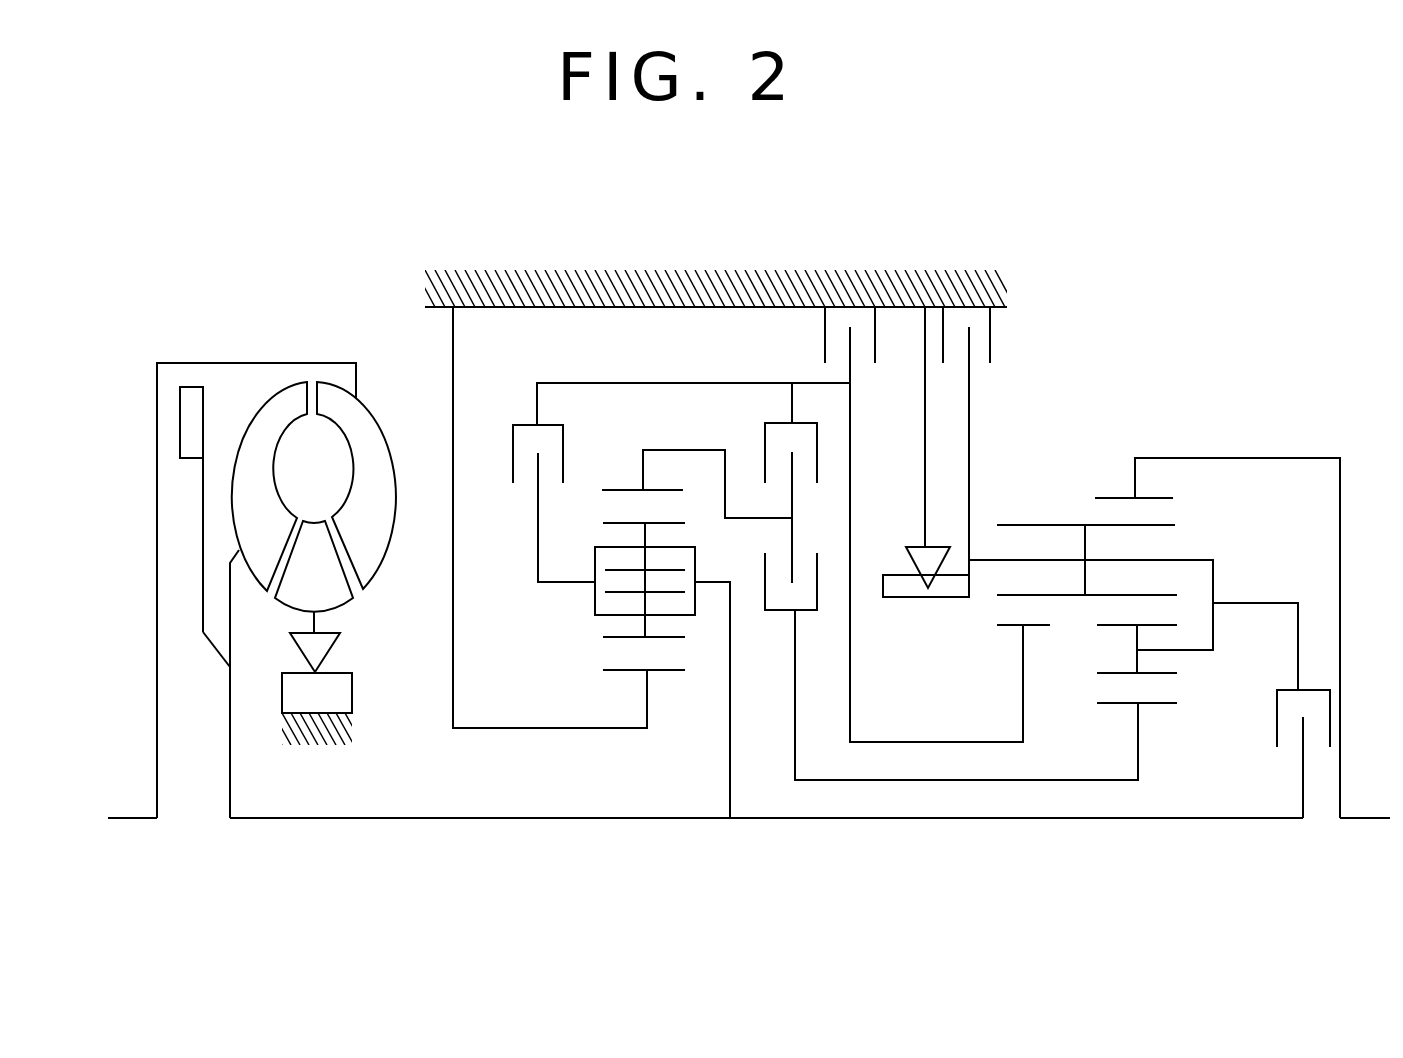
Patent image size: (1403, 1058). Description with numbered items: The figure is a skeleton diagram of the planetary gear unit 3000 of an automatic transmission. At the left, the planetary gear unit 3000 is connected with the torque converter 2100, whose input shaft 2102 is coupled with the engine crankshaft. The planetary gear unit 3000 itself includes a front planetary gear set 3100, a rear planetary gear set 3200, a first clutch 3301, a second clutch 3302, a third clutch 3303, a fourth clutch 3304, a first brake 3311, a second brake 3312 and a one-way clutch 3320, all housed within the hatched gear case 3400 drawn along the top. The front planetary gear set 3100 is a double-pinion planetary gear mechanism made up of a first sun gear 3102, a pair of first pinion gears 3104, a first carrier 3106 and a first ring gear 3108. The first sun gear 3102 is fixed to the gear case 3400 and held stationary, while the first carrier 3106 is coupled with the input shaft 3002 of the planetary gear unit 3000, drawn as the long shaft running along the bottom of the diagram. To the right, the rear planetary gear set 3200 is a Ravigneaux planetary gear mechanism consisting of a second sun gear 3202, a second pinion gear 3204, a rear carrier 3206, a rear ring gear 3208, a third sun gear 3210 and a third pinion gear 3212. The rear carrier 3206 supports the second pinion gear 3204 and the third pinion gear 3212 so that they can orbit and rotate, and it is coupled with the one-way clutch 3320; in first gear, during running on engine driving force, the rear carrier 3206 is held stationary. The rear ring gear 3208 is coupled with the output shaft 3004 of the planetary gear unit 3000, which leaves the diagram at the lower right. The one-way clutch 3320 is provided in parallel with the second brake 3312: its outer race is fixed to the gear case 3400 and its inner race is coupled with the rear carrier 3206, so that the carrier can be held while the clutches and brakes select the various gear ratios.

The torque converter 2100 is at (273, 326).
The input shaft 2102 is at (130, 821).
The planetary gear unit 3000 is at (801, 243).
The input shaft 3002 is at (711, 820).
The output shaft 3004 is at (1360, 822).
The front planetary gear set 3100 is at (540, 591).
The first sun gear 3102 is at (662, 672).
The first pinion gears 3104 is at (653, 521).
The first carrier 3106 is at (595, 597).
The first ring gear 3108 is at (632, 490).
The rear planetary gear set 3200 is at (1155, 416).
The second sun gear 3202 is at (1017, 625).
The second pinion gear 3204 is at (1050, 524).
The rear carrier 3206 is at (1200, 560).
The rear ring gear 3208 is at (1125, 497).
The third sun gear 3210 is at (1115, 701).
The third pinion gear 3212 is at (1165, 674).
The C1 clutch 3301 is at (806, 612).
The C2 clutch 3302 is at (1277, 733).
The C3 clutch 3303 is at (765, 440).
The C4 clutch 3304 is at (525, 425).
The B1 brake 3311 is at (825, 323).
The B2 brake 3312 is at (992, 326).
The one-way clutch 3320 is at (887, 610).
The gear case 3400 is at (635, 268).